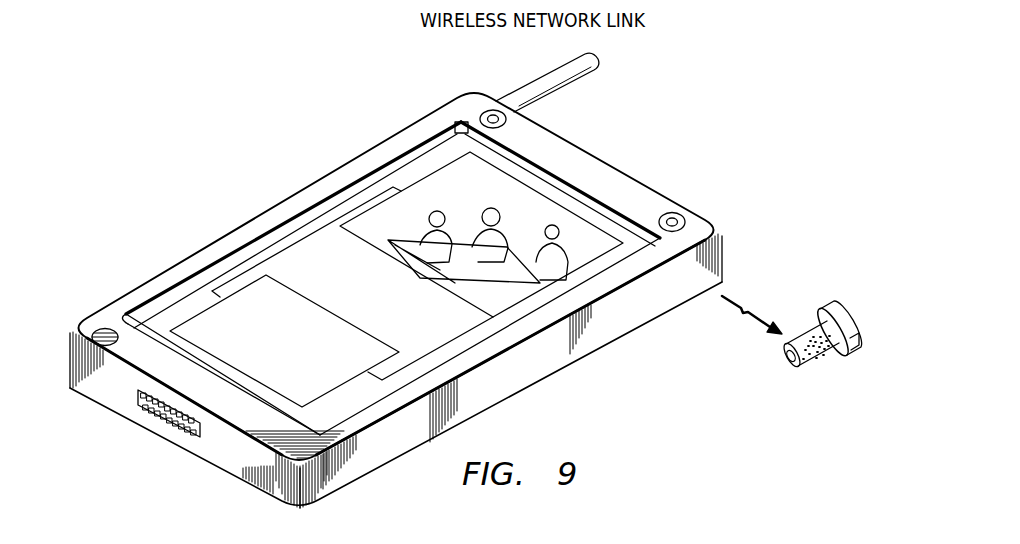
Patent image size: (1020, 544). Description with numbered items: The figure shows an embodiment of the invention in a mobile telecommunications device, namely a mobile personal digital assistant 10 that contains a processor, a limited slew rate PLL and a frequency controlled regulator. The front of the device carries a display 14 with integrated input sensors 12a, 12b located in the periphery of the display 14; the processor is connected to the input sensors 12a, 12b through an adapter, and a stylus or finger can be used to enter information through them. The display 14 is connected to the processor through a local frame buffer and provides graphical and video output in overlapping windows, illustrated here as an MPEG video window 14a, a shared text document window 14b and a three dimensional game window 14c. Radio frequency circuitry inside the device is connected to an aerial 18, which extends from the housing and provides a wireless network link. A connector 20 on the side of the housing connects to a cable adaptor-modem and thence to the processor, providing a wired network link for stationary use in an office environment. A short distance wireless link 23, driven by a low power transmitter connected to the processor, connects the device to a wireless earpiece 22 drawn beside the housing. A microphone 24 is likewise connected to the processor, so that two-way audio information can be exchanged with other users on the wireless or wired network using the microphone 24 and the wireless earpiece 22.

The mobile personal digital assistant 10 is at (603, 386).
The integrated input sensor 12a is at (343, 192).
The integrated input sensor 12b is at (635, 223).
The display 14 is at (386, 268).
The MPEG video window 14a is at (433, 190).
The shared text document window 14b is at (307, 245).
The three dimensional game window 14c is at (213, 313).
The aerial 18 is at (548, 78).
The connector 20 is at (150, 408).
The earpiece 22 is at (805, 370).
The short distance wireless link 23 is at (762, 307).
The microphone 24 is at (93, 327).